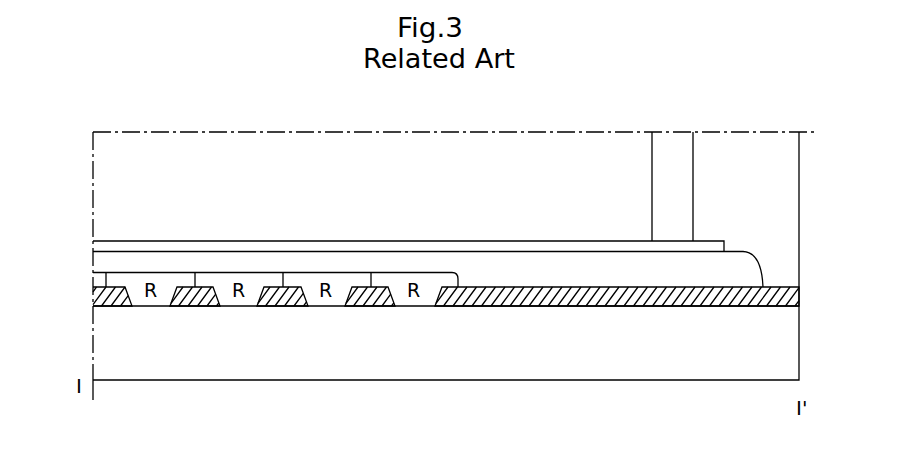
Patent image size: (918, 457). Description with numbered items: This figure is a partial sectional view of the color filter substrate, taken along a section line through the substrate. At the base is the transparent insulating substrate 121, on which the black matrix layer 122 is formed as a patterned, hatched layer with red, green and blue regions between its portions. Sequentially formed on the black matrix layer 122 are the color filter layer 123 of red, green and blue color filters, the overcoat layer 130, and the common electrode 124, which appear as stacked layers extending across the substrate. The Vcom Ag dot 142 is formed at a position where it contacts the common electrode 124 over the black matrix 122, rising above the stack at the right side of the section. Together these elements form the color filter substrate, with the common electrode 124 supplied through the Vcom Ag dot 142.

The transparent insulating substrate 121 is at (788, 340).
The black matrix layer 122 is at (113, 287).
The color filter layer 123 is at (235, 307).
The common electrode 124 is at (100, 246).
The overcoat layer 130 is at (97, 263).
The Vcom Ag dot 142 is at (672, 140).